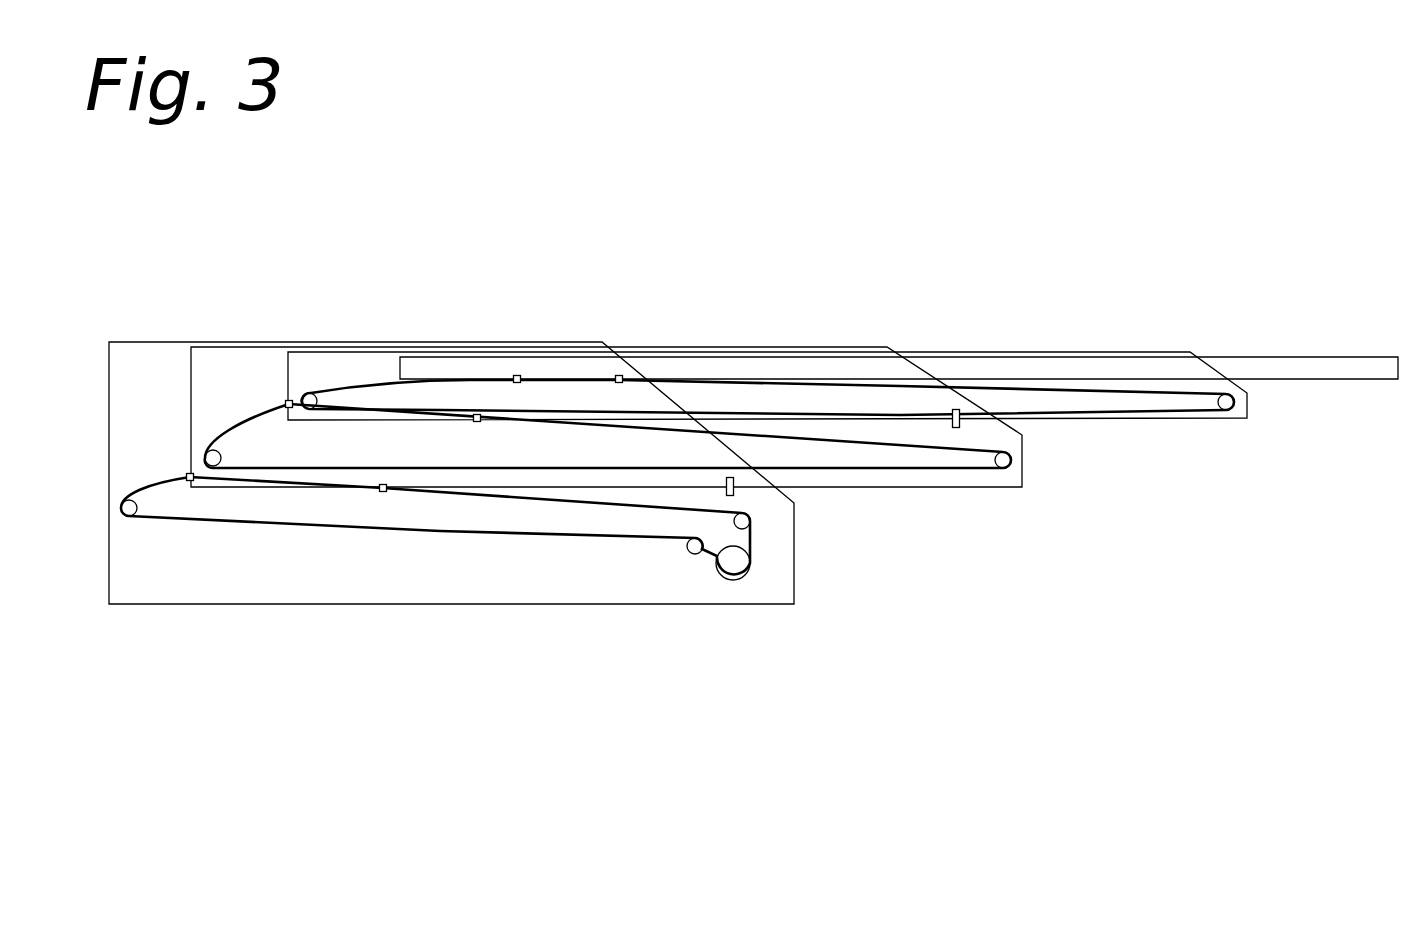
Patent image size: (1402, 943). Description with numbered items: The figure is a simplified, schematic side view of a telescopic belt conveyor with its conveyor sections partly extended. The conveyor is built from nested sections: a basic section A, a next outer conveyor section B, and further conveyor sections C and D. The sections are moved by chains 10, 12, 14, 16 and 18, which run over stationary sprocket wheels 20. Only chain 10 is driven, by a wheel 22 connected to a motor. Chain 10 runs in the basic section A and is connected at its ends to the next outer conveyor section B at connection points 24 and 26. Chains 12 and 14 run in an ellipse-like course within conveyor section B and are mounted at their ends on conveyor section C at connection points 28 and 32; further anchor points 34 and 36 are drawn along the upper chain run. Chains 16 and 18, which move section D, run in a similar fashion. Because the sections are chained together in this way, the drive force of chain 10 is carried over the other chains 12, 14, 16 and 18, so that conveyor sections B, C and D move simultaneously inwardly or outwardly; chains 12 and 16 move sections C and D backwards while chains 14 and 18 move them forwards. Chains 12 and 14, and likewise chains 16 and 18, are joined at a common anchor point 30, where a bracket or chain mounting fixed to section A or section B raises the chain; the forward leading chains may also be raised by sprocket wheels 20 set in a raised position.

The chain 10 is at (308, 531).
The chain 12 is at (342, 470).
The chain 14 is at (902, 437).
The chain 16 is at (375, 385).
The chain 18 is at (839, 380).
The stationary sprocket wheel 20 is at (320, 395).
The wheel 22 is at (733, 572).
The connection point 24 is at (192, 482).
The connection point 26 is at (385, 491).
The connection point 28 is at (287, 399).
The common anchor point 30 is at (735, 493).
The connection point 32 is at (478, 422).
The belt anchor 34 is at (519, 376).
The belt anchor 36 is at (621, 376).
The basic section A is at (143, 358).
The conveyor section B is at (222, 358).
The conveyor section C is at (311, 370).
The conveyor section D is at (430, 367).